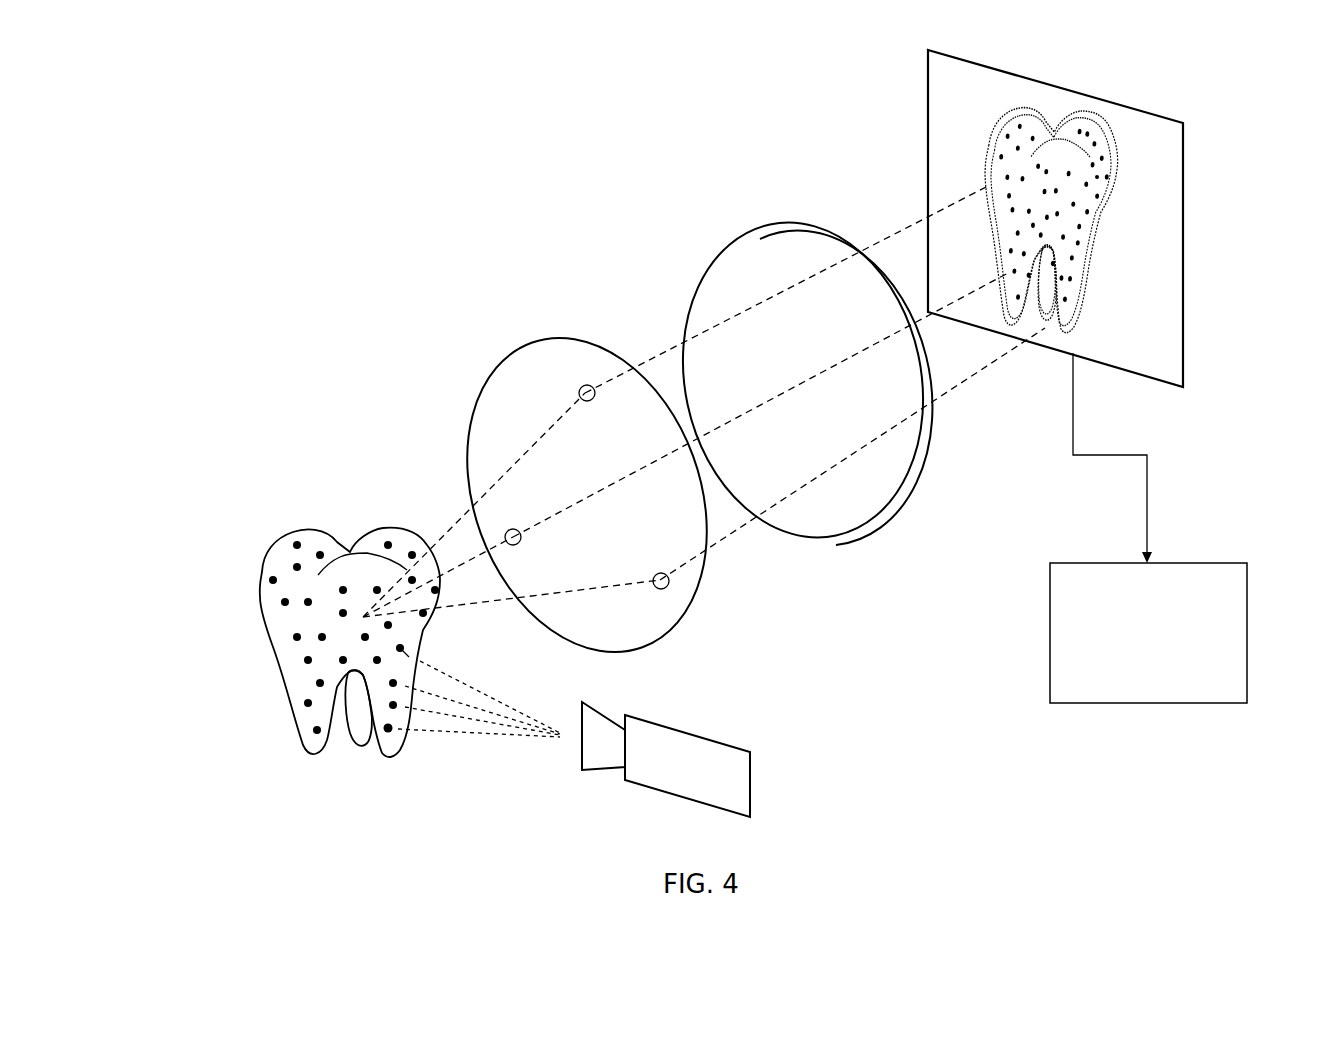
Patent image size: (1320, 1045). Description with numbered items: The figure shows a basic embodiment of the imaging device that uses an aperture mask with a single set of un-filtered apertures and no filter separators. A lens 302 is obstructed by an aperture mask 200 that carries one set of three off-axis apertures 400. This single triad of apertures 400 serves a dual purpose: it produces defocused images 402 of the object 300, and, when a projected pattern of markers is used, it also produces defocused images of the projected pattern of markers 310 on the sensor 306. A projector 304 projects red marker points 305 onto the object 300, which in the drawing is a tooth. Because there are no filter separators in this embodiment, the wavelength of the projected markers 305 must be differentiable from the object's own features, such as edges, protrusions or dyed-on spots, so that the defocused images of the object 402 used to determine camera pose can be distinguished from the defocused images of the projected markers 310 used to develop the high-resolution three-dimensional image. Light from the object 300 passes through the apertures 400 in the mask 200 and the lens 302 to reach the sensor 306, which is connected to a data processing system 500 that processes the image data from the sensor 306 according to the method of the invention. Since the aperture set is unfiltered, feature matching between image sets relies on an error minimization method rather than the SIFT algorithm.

The aperture mask 200 is at (493, 373).
The object 300 is at (263, 600).
The lens 302 is at (724, 246).
The projector 304 is at (753, 777).
The marker points 305 is at (390, 735).
The sensor 306 is at (1185, 233).
The defocused images of the projected pattern of markers 310 is at (1097, 177).
The off-axis apertures 400 is at (585, 385).
The defocused images of the object 402 is at (985, 127).
The data processing system 500 is at (1197, 562).